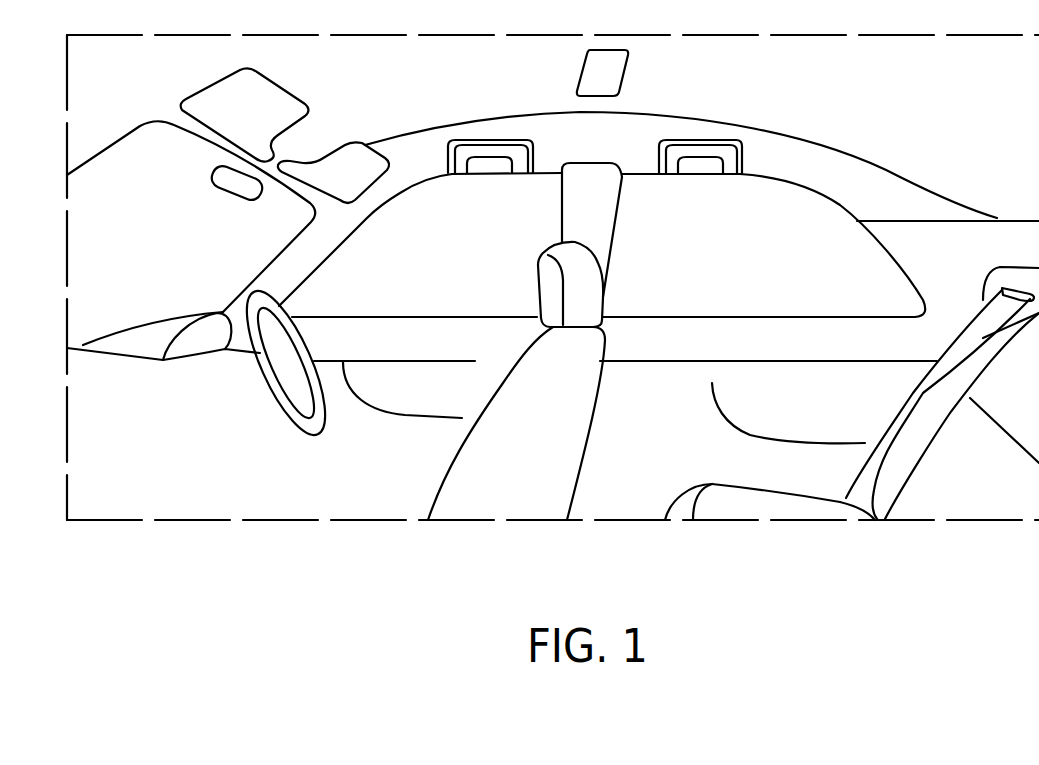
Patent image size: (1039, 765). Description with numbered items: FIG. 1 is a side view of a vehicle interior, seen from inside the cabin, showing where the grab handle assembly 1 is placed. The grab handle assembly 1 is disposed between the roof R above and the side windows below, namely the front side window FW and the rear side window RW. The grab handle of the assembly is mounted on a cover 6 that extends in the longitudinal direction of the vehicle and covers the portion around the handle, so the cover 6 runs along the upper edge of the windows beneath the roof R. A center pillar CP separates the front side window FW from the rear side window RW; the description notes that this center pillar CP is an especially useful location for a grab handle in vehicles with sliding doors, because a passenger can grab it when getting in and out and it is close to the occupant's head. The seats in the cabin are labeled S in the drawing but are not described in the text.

The grab handle assembly 1 is at (458, 163).
The cover 6 is at (824, 162).
The roof R is at (552, 73).
The center pillar CP is at (592, 230).
The front side window FW is at (420, 239).
The rear side window RW is at (773, 245).
The seat S is at (476, 481).